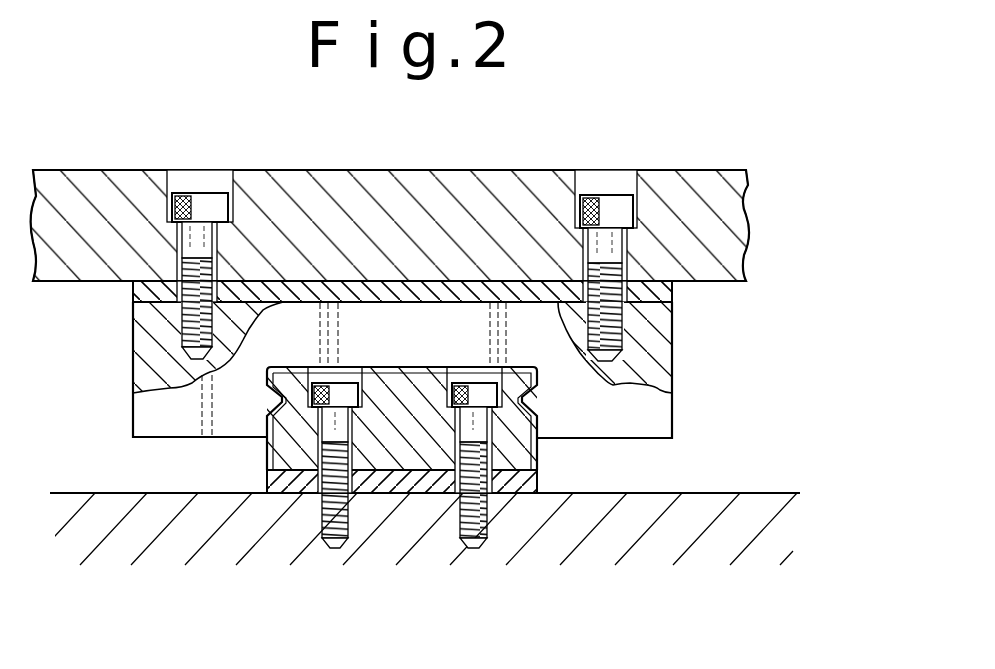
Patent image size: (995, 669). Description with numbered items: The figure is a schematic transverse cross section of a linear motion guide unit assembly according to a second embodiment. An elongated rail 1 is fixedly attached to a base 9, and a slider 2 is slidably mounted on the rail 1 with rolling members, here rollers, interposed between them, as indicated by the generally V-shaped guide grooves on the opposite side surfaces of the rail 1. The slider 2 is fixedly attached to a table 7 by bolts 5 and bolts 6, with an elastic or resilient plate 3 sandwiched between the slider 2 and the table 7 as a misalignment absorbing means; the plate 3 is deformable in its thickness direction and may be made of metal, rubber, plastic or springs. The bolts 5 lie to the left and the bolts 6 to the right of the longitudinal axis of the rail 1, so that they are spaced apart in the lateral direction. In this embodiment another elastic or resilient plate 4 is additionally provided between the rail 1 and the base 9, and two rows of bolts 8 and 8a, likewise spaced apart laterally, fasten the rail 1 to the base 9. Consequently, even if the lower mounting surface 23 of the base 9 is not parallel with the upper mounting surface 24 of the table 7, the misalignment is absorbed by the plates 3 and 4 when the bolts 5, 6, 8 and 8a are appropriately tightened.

The rail 1 is at (533, 455).
The slider 2 is at (655, 368).
The elastic or resilient plate 3 is at (672, 300).
The elastic or resilient plate 4 is at (535, 483).
The bolts 5 is at (193, 193).
The bolts 6 is at (601, 195).
The table 7 is at (709, 203).
The bolts 8 is at (332, 549).
The bolts 8a is at (466, 549).
The base 9 is at (715, 510).
The lower mounting surface 23 is at (128, 491).
The upper mounting surface 24 is at (107, 283).